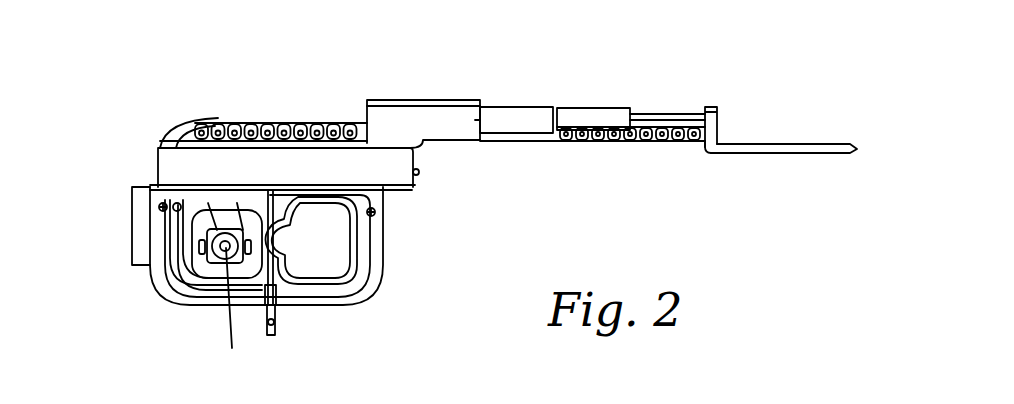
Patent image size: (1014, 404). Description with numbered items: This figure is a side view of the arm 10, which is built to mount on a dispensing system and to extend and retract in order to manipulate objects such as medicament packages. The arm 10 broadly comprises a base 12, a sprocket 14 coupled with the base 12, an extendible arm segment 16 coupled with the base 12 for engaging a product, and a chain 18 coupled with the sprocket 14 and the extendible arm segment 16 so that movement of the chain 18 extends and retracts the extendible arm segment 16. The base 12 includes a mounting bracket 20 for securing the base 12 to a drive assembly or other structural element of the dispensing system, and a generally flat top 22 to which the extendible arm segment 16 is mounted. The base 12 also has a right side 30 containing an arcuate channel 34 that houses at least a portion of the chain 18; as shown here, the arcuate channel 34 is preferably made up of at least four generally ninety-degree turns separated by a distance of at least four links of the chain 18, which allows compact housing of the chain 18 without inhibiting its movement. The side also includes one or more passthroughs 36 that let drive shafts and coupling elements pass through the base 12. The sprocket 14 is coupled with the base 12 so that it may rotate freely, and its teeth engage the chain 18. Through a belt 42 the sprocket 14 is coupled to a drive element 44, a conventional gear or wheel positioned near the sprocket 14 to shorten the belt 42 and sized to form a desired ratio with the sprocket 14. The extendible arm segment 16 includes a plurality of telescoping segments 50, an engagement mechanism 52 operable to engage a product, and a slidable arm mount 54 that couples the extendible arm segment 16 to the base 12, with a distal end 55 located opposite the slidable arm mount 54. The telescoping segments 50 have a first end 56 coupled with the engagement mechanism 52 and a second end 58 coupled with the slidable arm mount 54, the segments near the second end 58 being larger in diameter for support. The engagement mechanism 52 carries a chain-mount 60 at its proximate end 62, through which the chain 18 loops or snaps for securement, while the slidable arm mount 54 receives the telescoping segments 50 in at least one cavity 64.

The arm 10 is at (126, 58).
The base 12 is at (375, 230).
The sprocket 14 is at (200, 212).
The extendible arm segment 16 is at (593, 77).
The chain 18 is at (262, 124).
The mounting bracket 20 is at (133, 200).
The top 22 is at (162, 168).
The right side 30 is at (375, 288).
The arcuate channel 34 is at (312, 292).
The passthroughs 36 is at (221, 290).
The belt 42 is at (222, 205).
The drive element 44 is at (220, 314).
The telescoping segments 50 is at (602, 113).
The engagement mechanism 52 is at (790, 148).
The slidable arm mount 54 is at (427, 112).
The distal end 55 is at (627, 162).
The first end 56 is at (695, 87).
The second end 58 is at (519, 89).
The chain-mount 60 is at (697, 143).
The proximate end 62 is at (715, 128).
The cavity 64 is at (475, 120).